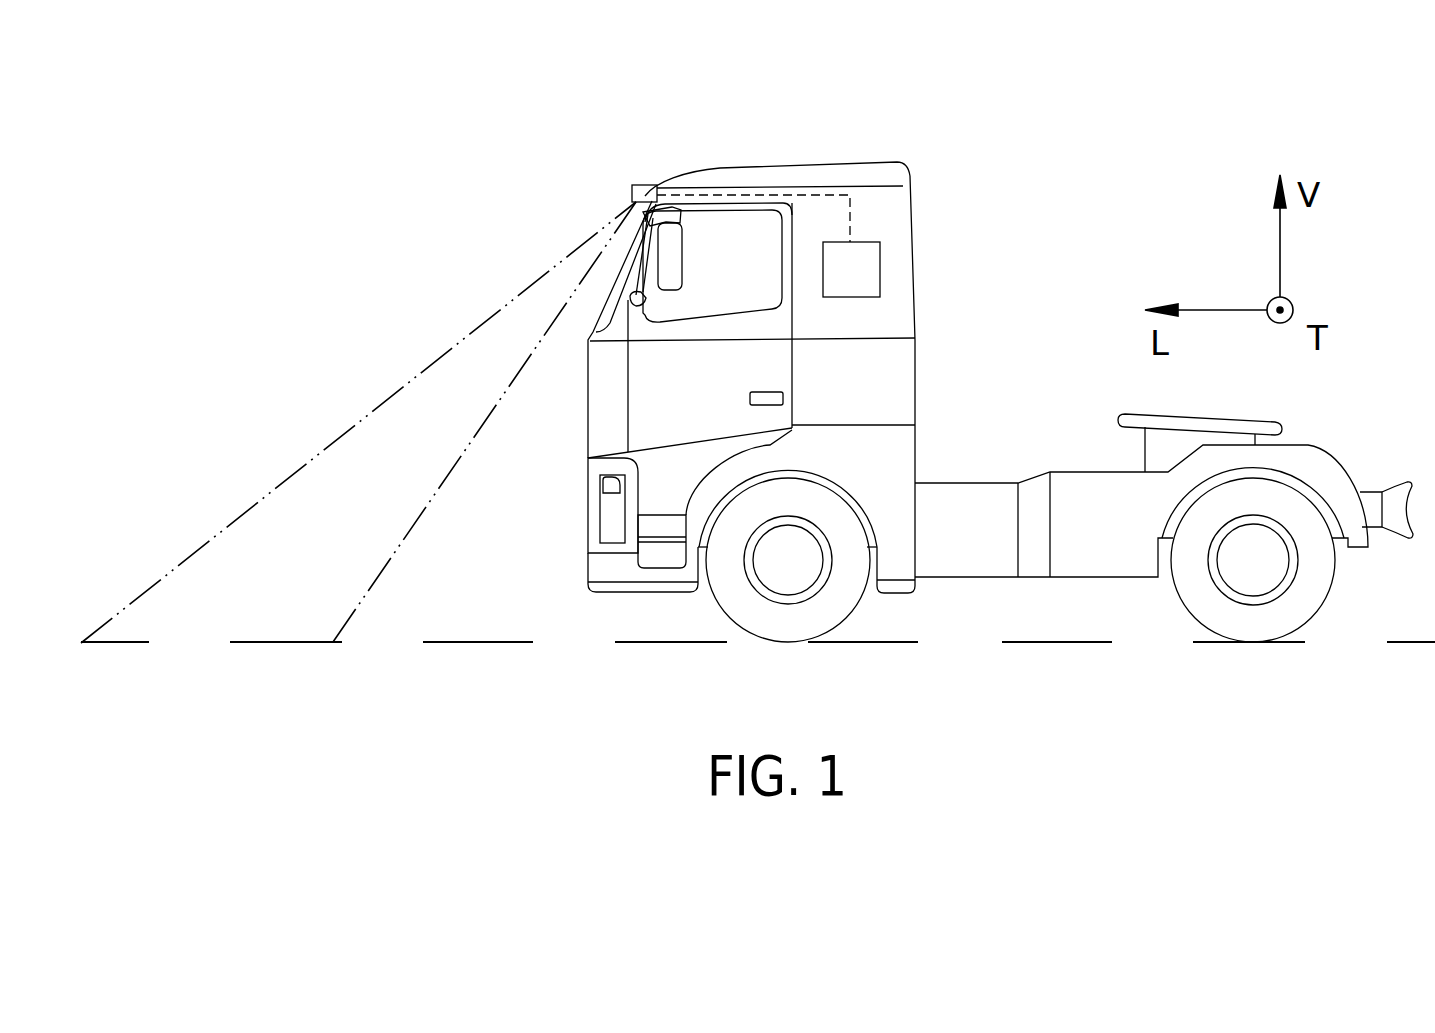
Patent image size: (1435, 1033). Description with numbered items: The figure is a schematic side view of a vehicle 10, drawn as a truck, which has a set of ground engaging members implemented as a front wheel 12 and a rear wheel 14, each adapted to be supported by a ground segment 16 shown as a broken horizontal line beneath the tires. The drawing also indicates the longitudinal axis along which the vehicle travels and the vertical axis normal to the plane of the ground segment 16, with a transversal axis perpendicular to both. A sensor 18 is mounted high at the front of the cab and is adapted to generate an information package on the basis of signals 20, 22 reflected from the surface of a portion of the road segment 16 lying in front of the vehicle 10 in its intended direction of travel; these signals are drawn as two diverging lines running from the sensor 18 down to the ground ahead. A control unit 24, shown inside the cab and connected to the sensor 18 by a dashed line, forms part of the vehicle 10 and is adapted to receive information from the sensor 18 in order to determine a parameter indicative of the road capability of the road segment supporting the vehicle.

The vehicle 10 is at (1000, 357).
The front wheel 12 is at (792, 618).
The rear wheel 14 is at (1256, 618).
The ground segment 16 is at (478, 643).
The sensor 18 is at (640, 185).
The signal 20 is at (328, 441).
The signal 22 is at (458, 446).
The control unit 24 is at (880, 268).